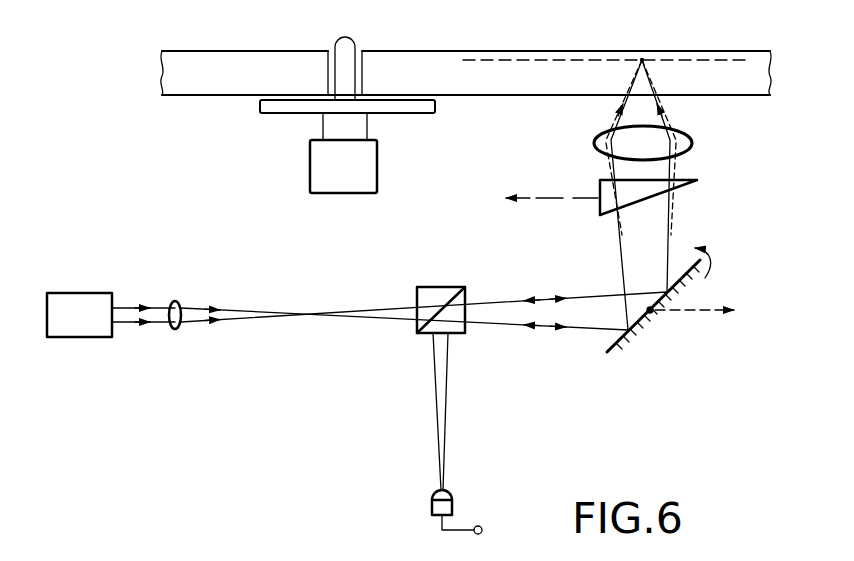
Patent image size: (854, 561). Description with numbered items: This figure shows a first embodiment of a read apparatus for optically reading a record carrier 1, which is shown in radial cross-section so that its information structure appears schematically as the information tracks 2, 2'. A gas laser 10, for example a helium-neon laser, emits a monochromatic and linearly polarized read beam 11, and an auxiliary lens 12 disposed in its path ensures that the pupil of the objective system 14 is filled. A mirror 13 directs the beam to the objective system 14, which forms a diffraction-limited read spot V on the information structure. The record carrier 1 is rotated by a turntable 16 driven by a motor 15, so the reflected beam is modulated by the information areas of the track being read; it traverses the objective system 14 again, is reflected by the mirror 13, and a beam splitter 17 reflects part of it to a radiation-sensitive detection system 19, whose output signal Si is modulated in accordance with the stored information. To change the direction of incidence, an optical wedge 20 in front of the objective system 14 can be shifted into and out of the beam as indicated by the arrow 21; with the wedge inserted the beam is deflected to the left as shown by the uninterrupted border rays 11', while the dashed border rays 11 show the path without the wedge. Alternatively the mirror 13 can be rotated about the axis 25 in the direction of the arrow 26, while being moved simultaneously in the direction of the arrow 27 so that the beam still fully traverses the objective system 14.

The record carrier 1 is at (477, 50).
The information track 2 is at (639, 35).
The information track 2' is at (640, 37).
The gas laser 10 is at (78, 293).
The read beam 11 is at (403, 275).
The border rays 11' is at (648, 147).
The auxiliary lens 12 is at (178, 301).
The mirror 13 is at (622, 352).
The objective system 14 is at (692, 140).
The motor 15 is at (377, 172).
The turntable 16 is at (432, 103).
The beam splitter 17 is at (452, 287).
The radiation-sensitive detection system 19 is at (452, 506).
The optical wedge 20 is at (666, 193).
The arrow 21 is at (552, 210).
The axis 25 is at (655, 314).
The arrow 26 is at (716, 263).
The arrow 27 is at (696, 323).
The read spot V is at (635, 62).
The output signal Si is at (483, 527).